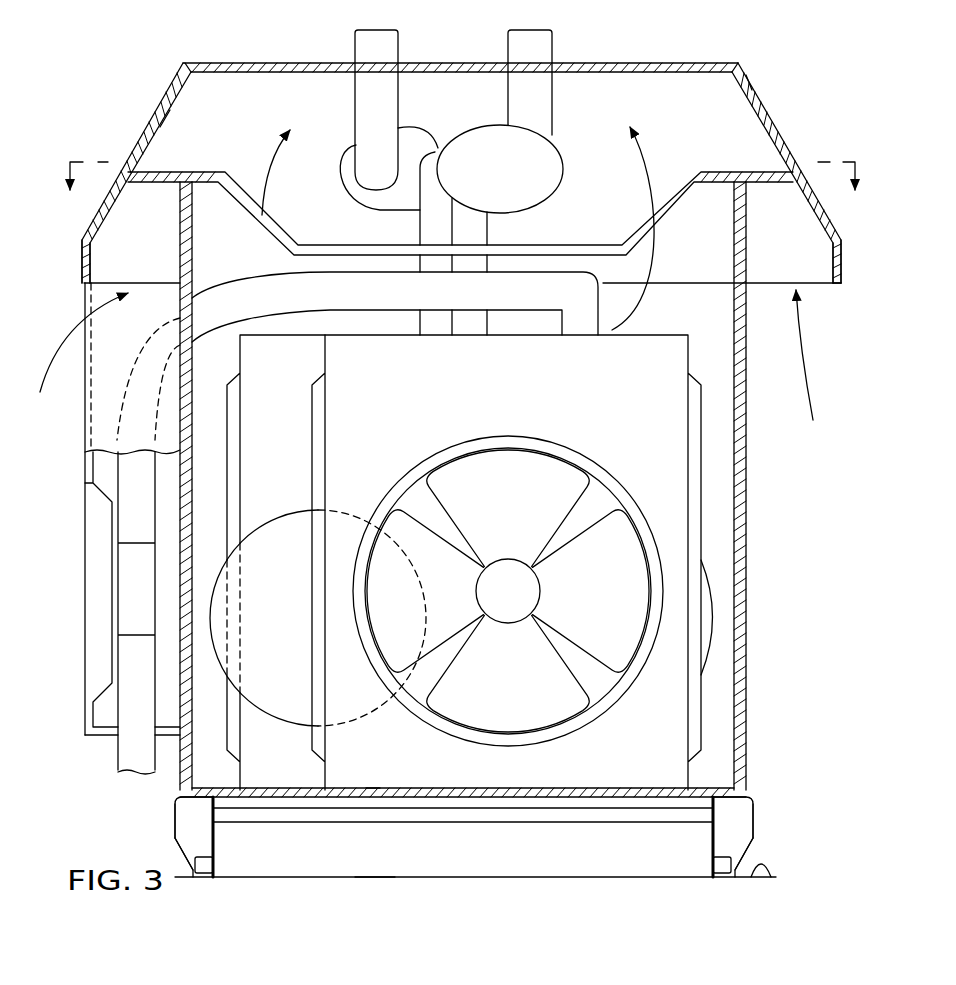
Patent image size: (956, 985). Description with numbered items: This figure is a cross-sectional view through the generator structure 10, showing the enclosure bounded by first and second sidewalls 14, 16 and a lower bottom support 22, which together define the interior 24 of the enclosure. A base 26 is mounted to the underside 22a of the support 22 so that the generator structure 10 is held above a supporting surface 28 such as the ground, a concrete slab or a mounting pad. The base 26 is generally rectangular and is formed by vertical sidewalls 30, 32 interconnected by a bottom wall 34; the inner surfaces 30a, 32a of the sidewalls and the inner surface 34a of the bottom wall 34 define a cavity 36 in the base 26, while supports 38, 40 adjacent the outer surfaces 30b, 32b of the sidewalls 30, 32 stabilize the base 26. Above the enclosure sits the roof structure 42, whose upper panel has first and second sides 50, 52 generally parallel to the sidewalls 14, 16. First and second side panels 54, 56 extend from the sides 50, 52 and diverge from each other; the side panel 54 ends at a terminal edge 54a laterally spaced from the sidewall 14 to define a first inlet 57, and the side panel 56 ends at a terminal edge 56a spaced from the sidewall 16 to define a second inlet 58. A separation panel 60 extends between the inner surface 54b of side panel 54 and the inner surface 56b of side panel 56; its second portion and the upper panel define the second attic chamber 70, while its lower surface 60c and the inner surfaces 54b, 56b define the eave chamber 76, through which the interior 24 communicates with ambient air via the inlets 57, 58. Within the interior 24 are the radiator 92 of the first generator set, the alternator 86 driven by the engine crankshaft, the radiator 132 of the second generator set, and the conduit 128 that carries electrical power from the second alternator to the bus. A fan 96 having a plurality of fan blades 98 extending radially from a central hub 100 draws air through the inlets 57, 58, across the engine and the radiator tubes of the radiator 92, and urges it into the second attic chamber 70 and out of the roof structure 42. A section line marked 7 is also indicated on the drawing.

The generator structure 10 is at (793, 490).
The first sidewall 14 is at (182, 545).
The second sidewall 16 is at (744, 540).
The lower bottom support 22 is at (603, 788).
The underside 22a is at (361, 788).
The interior 24 is at (712, 321).
The base 26 is at (513, 884).
The supporting surface 28 is at (771, 877).
The vertical sidewall 30 is at (217, 857).
The inner surface 30a is at (215, 826).
The outer surface 30b is at (213, 823).
The vertical sidewall 32 is at (713, 860).
The inner surface 32a is at (713, 833).
The outer surface 32b is at (716, 813).
The bottom wall 34 is at (302, 875).
The inner surface 34a is at (366, 876).
The cavity 36 is at (446, 862).
The support 38 is at (183, 860).
The support 40 is at (760, 841).
The roof structure 42 is at (266, 30).
The first side 50 is at (185, 63).
The second side 52 is at (739, 63).
The first side panel 54 is at (133, 153).
The terminal edge 54a is at (84, 268).
The inner surface 54b is at (166, 135).
The second side panel 56 is at (774, 119).
The terminal edge 56a is at (840, 281).
The inner surface 56b is at (742, 103).
The first inlet 57 is at (100, 305).
The second inlet 58 is at (826, 283).
The separation panel 60 is at (210, 173).
The lower surface 60c is at (295, 327).
The second attic chamber 70 is at (616, 207).
The eave chamber 76 is at (236, 264).
The alternator 86 is at (709, 608).
The radiator 92 is at (636, 396).
The fan 96 is at (428, 447).
The fan blades 98 is at (573, 520).
The central hub 100 is at (523, 588).
The conduit 128 is at (268, 517).
The radiator 132 is at (295, 410).
The section line 7- 7 is at (86, 194).